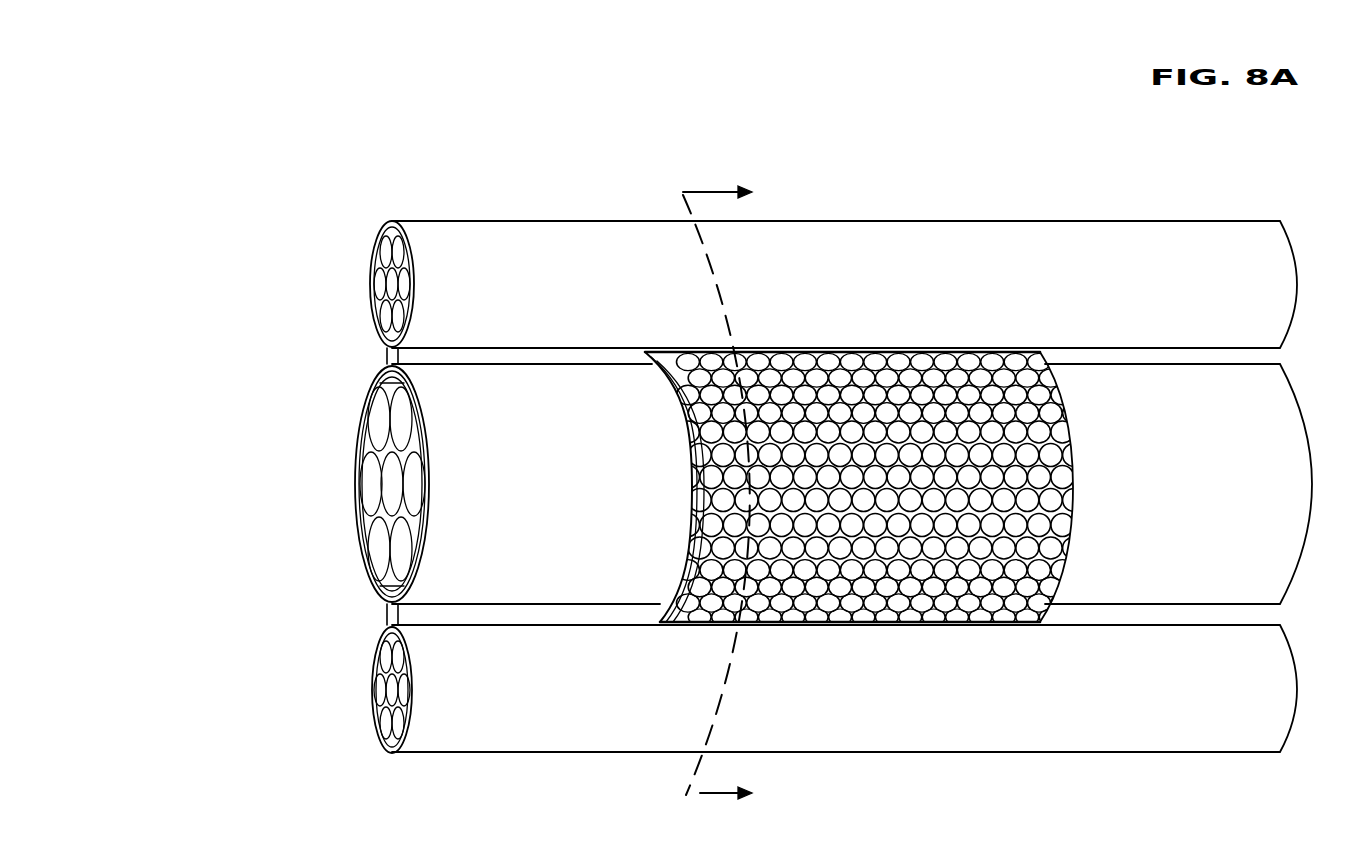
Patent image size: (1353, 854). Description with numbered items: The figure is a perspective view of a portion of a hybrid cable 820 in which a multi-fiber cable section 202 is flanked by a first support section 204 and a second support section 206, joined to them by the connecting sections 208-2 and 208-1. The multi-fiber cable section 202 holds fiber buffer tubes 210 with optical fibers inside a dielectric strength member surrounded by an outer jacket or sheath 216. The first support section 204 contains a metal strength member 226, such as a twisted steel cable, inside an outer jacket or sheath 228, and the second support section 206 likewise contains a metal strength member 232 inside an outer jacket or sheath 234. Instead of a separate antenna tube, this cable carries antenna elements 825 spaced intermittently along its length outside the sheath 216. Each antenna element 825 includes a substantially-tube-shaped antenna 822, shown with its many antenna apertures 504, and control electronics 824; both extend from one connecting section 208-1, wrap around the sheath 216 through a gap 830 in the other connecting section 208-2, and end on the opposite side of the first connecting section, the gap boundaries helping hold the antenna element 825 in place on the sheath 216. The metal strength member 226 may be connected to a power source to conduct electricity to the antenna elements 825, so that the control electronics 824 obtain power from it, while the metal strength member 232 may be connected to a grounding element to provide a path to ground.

The hybrid cable 820 is at (245, 65).
The first support section 204 is at (777, 244).
The metal strength member 226 is at (380, 285).
The outer jacket or sheath 228 is at (857, 220).
The connecting section 208-2 is at (385, 354).
The multi-fiber cable section 202 is at (778, 484).
The fiber buffer tubes 210 is at (358, 544).
The outer jacket or sheath 216 is at (378, 596).
The connecting section 208-1 is at (387, 612).
The second support section 206 is at (767, 726).
The metal strength member 232 is at (378, 690).
The outer jacket or sheath 234 is at (862, 752).
The gap 830 is at (853, 395).
The substantially-tube-shaped antenna 822 is at (690, 412).
The control electronics 824 is at (688, 522).
The antenna apertures 504 is at (830, 352).
The antenna elements 825 is at (1082, 404).